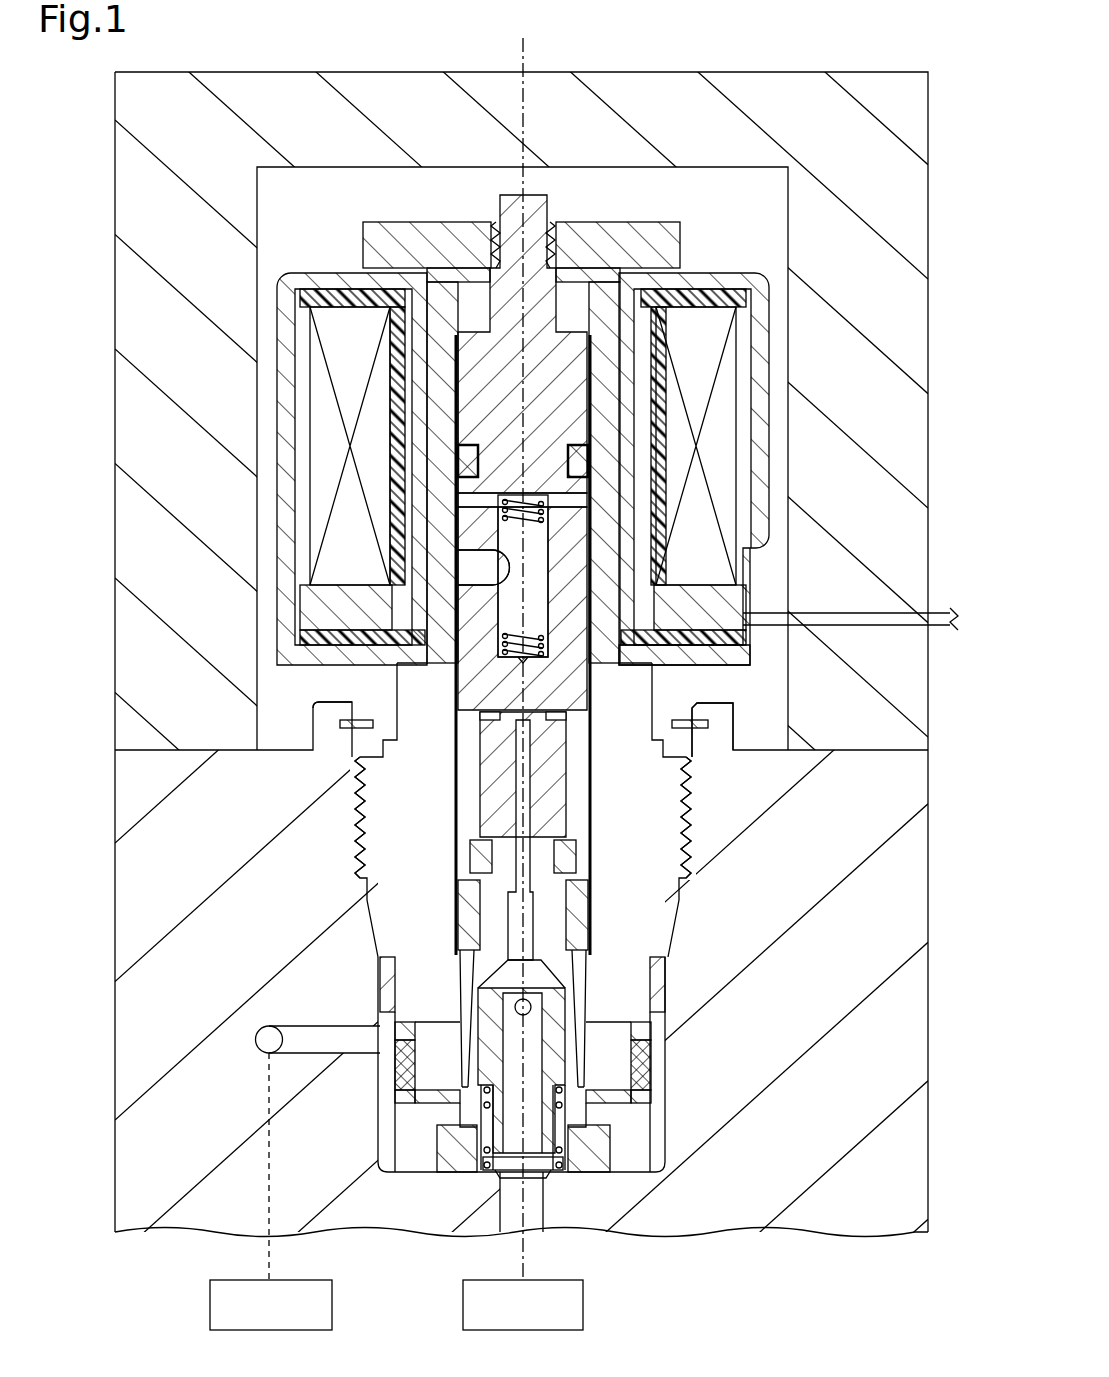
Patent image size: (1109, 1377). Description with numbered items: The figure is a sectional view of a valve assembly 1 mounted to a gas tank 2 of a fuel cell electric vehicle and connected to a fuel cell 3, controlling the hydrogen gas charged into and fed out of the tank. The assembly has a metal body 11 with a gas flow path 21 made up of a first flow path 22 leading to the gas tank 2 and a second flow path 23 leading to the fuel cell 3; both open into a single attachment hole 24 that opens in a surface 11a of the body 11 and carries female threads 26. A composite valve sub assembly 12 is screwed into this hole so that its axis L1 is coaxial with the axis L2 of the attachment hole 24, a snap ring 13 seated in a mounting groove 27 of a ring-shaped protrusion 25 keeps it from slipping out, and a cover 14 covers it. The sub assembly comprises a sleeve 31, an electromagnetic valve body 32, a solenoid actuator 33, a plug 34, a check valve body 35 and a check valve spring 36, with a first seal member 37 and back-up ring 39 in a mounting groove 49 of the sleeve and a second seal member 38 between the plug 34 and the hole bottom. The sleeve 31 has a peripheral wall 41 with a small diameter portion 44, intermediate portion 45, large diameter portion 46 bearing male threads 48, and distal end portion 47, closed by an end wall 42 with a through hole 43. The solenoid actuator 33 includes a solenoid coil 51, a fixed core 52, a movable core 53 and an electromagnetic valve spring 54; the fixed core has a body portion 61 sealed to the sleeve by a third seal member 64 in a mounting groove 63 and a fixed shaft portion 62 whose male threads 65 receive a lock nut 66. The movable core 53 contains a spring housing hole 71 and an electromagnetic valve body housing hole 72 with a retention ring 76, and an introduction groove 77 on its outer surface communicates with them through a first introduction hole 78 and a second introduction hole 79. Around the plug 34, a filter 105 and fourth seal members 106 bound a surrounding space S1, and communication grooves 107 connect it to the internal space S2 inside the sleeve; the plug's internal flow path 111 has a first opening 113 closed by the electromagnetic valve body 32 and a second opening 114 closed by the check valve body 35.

The valve assembly 1 is at (927, 58).
The gas tank 2 is at (335, 1306).
The fuel cell 3 is at (586, 1306).
The body 11 is at (115, 790).
The surface 11a is at (318, 704).
The composite valve sub assembly 12 is at (762, 188).
The snap ring 13 is at (345, 726).
The cover 14 is at (232, 72).
The gas flow path 21 is at (402, 1133).
The first flow path 22 is at (308, 1022).
The second flow path 23 is at (537, 1218).
The attachment hole 24 is at (662, 1088).
The protrusion 25 is at (735, 733).
The female threads 26 is at (690, 868).
The mounting groove 27 is at (690, 730).
The sleeve 31 is at (432, 273).
The electromagnetic valve body 32 is at (458, 710).
The solenoid actuator 33 is at (260, 284).
The plug 34 is at (390, 1172).
The check valve body 35 is at (492, 1172).
The check valve spring 36 is at (555, 1172).
The first seal member 37 is at (378, 1000).
The second seal member 38 is at (624, 1172).
The back-up ring 39 is at (378, 966).
The peripheral wall 41 is at (739, 467).
The end wall 42 is at (605, 290).
The through hole 43 is at (571, 310).
The small diameter portion 44 is at (745, 470).
The intermediate portion 45 is at (645, 678).
The large diameter portion 46 is at (667, 920).
The distal end portion 47 is at (652, 1045).
The male threads 48 is at (684, 800).
The mounting groove 49 is at (596, 962).
The solenoid coil 51 is at (752, 345).
The fixed core 52 is at (534, 310).
The movable core 53 is at (590, 512).
The electromagnetic valve spring 54 is at (497, 500).
The body portion 61 is at (585, 310).
The fixed shaft portion 62 is at (531, 198).
The mounting groove 63 is at (468, 456).
The third seal member 64 is at (575, 456).
The male threads 65 is at (490, 240).
The lock nut 66 is at (363, 240).
The spring housing hole 71 is at (540, 604).
The electromagnetic valve body housing hole 72 is at (481, 774).
The retention ring 76 is at (580, 858).
The introduction groove 77 is at (459, 672).
The first introduction hole 78 is at (460, 570).
The second introduction hole 79 is at (467, 725).
The filter 105 is at (400, 1070).
The fourth seal members 106 is at (400, 1100).
The communication grooves 107 is at (470, 1080).
The internal flow path 111 is at (535, 905).
The first opening 113 is at (465, 888).
The second opening 114 is at (465, 945).
The axis L1 is at (582, 653).
The axis L2 is at (527, 56).
The surrounding space S1 is at (384, 1142).
The internal space S2 is at (456, 870).